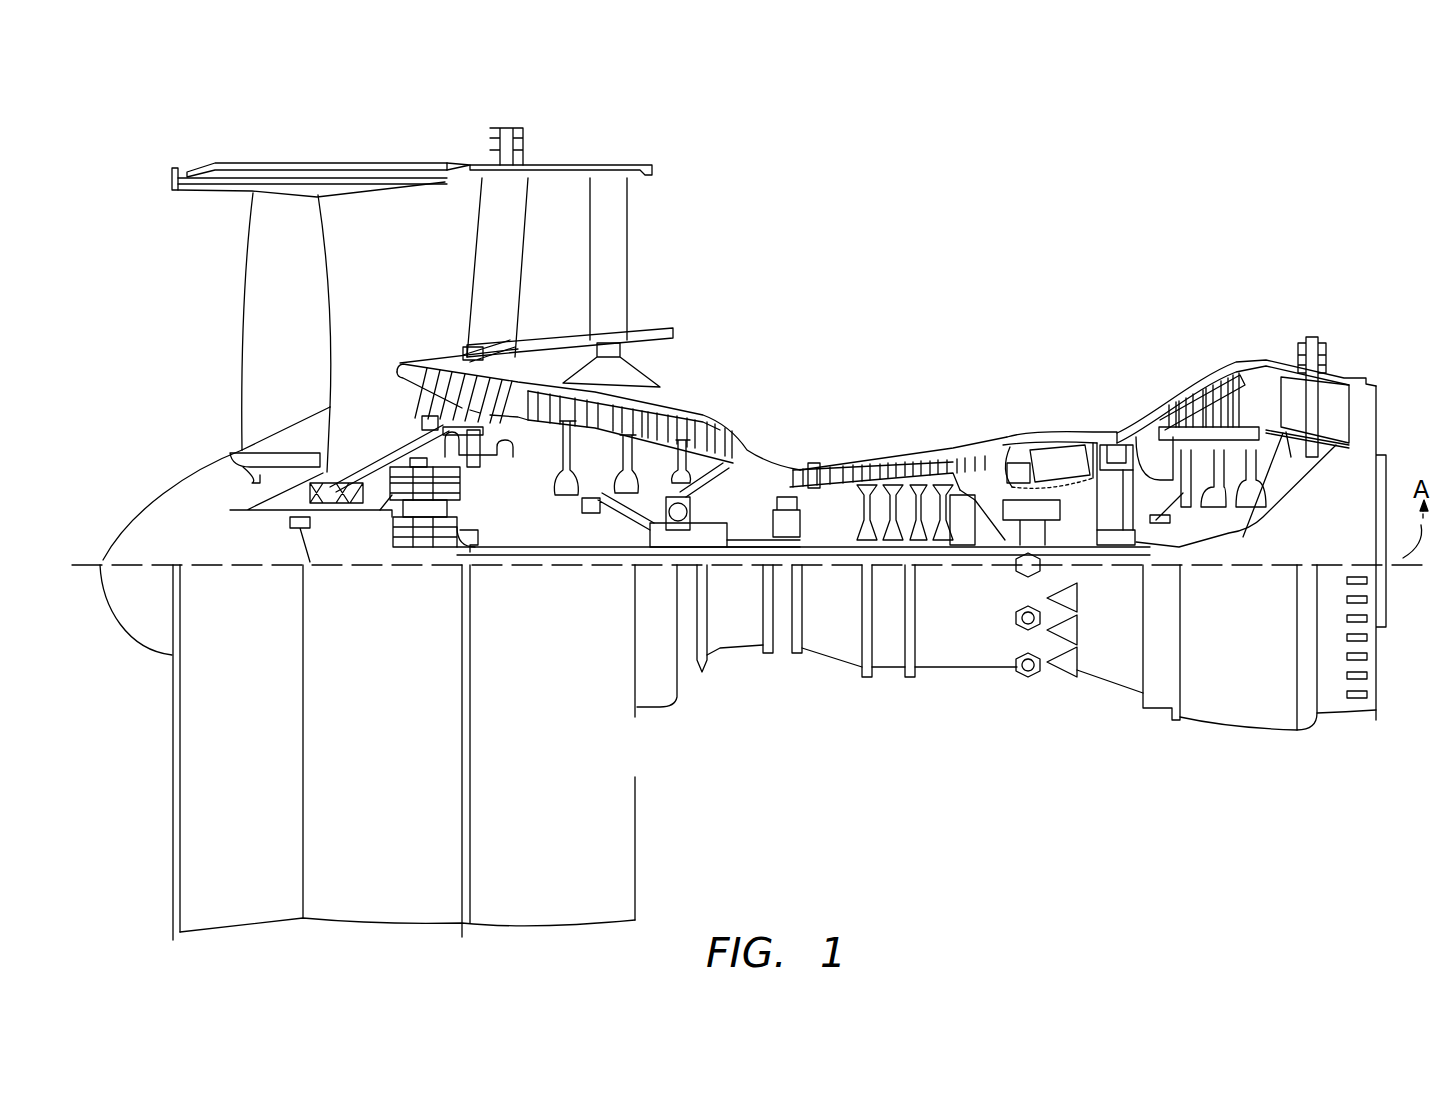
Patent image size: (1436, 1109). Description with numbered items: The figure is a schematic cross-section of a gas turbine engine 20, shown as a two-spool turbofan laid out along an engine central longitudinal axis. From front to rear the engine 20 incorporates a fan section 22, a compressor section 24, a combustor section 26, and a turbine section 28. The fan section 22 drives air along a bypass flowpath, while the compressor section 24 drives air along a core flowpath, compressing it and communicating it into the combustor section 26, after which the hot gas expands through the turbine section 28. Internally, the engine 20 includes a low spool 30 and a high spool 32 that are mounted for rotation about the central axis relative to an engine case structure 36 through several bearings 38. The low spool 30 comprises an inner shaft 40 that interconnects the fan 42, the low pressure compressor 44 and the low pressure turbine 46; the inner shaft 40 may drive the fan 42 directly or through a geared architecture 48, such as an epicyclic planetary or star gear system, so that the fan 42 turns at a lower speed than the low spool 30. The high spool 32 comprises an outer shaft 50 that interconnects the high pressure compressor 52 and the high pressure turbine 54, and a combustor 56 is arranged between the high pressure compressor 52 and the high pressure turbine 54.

The gas turbine engine 20 is at (1104, 218).
The fan section 22 is at (463, 140).
The compressor section 24 is at (470, 300).
The combustor section 26 is at (1095, 300).
The turbine section 28 is at (1313, 302).
The low spool 30 is at (745, 507).
The high spool 32 is at (957, 503).
The engine case structure 36 is at (887, 675).
The bearings 38 is at (498, 640).
The inner shaft 40 is at (1080, 550).
The fan 42 is at (306, 373).
The low pressure compressor 44 is at (657, 406).
The low pressure turbine 46 is at (1238, 382).
The geared architecture 48 is at (415, 548).
The outer shaft 50 is at (1085, 522).
The high pressure compressor 52 is at (813, 463).
The high pressure turbine 54 is at (1118, 450).
The combustor 56 is at (1053, 465).